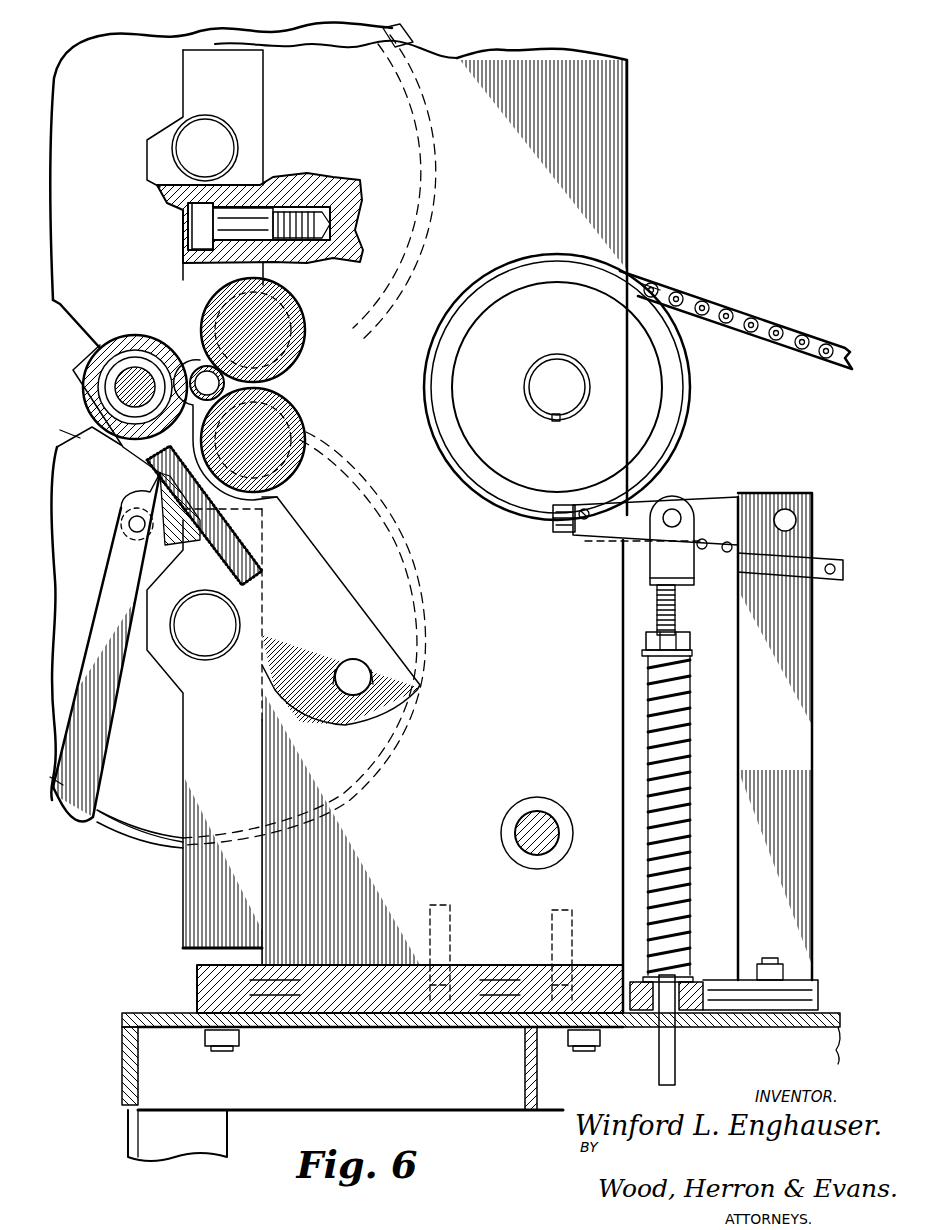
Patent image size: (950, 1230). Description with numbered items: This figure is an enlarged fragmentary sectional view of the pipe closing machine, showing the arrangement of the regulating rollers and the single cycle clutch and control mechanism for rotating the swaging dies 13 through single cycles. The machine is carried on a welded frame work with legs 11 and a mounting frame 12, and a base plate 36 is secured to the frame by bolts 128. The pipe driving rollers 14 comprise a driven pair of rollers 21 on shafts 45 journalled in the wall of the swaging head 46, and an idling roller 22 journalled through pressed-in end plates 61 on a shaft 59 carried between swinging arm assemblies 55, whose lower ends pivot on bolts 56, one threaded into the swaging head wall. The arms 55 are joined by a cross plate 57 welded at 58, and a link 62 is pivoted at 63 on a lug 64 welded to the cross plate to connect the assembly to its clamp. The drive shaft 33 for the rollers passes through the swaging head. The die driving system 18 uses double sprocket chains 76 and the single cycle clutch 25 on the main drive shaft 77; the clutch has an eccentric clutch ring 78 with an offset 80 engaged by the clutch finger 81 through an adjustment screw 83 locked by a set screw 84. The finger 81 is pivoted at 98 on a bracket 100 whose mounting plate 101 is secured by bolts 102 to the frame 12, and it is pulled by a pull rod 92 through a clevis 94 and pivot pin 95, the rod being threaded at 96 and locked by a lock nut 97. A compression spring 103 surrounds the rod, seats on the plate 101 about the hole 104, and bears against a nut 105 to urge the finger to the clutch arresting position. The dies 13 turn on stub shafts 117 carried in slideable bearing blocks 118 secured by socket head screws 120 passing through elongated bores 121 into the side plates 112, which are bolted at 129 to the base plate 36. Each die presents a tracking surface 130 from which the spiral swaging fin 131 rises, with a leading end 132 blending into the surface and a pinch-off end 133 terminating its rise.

The legs 11 is at (152, 1140).
The mounting frame 12 is at (125, 1053).
The rotary swaging dies 13 is at (404, 38).
The pipe driving rollers 14 is at (272, 388).
The driving system 18 is at (788, 338).
The driven rollers 21 is at (298, 303).
The idling roller 22 is at (97, 352).
The single cycle clutch 25 is at (656, 297).
The drive shaft 33 is at (540, 818).
The base plate 36 is at (200, 983).
The shafts 45 is at (306, 432).
The swaging head 46 is at (626, 133).
The swinging arm assemblies 55 is at (318, 578).
The bolts 56 is at (353, 692).
The cross plate 57 is at (215, 545).
The welds 58 is at (250, 560).
The shaft 59 is at (145, 378).
The end plates 61 is at (124, 366).
The link 62 is at (93, 750).
The pivot 63 is at (128, 529).
The lug 64 is at (143, 498).
The double sprocket chains 76 is at (718, 312).
The main drive shaft 77 is at (550, 372).
The eccentric clutch ring 78 is at (672, 384).
The offset 80 is at (560, 506).
The clutch finger 81 is at (745, 505).
The adjustment screw 83 is at (560, 532).
The set screw 84 is at (588, 522).
The pull rod 92 is at (677, 1054).
The clevis 94 is at (696, 563).
The pivot pin 95 is at (674, 510).
The threaded portion 96 is at (676, 613).
The lock nut 97 is at (650, 578).
The pivot 98 is at (788, 516).
The bracket 100 is at (752, 738).
The mounting plate 101 is at (714, 990).
The bolts 102 is at (784, 972).
The compression spring 103 is at (692, 815).
The hole 104 is at (642, 1012).
The nut 105 is at (692, 636).
The side plates 112 is at (600, 190).
The stub shafts 117 is at (210, 135).
The bearing blocks 118 is at (188, 68).
The socket head screws 120 is at (252, 215).
The elongated bores 121 is at (192, 238).
The bolts 128 is at (228, 1048).
The bolts 129 is at (445, 910).
The tracking surface 130 is at (422, 170).
The spiral swaging fin 131 is at (120, 840).
The leading end 132 is at (340, 444).
The pinch-off end 133 is at (64, 432).